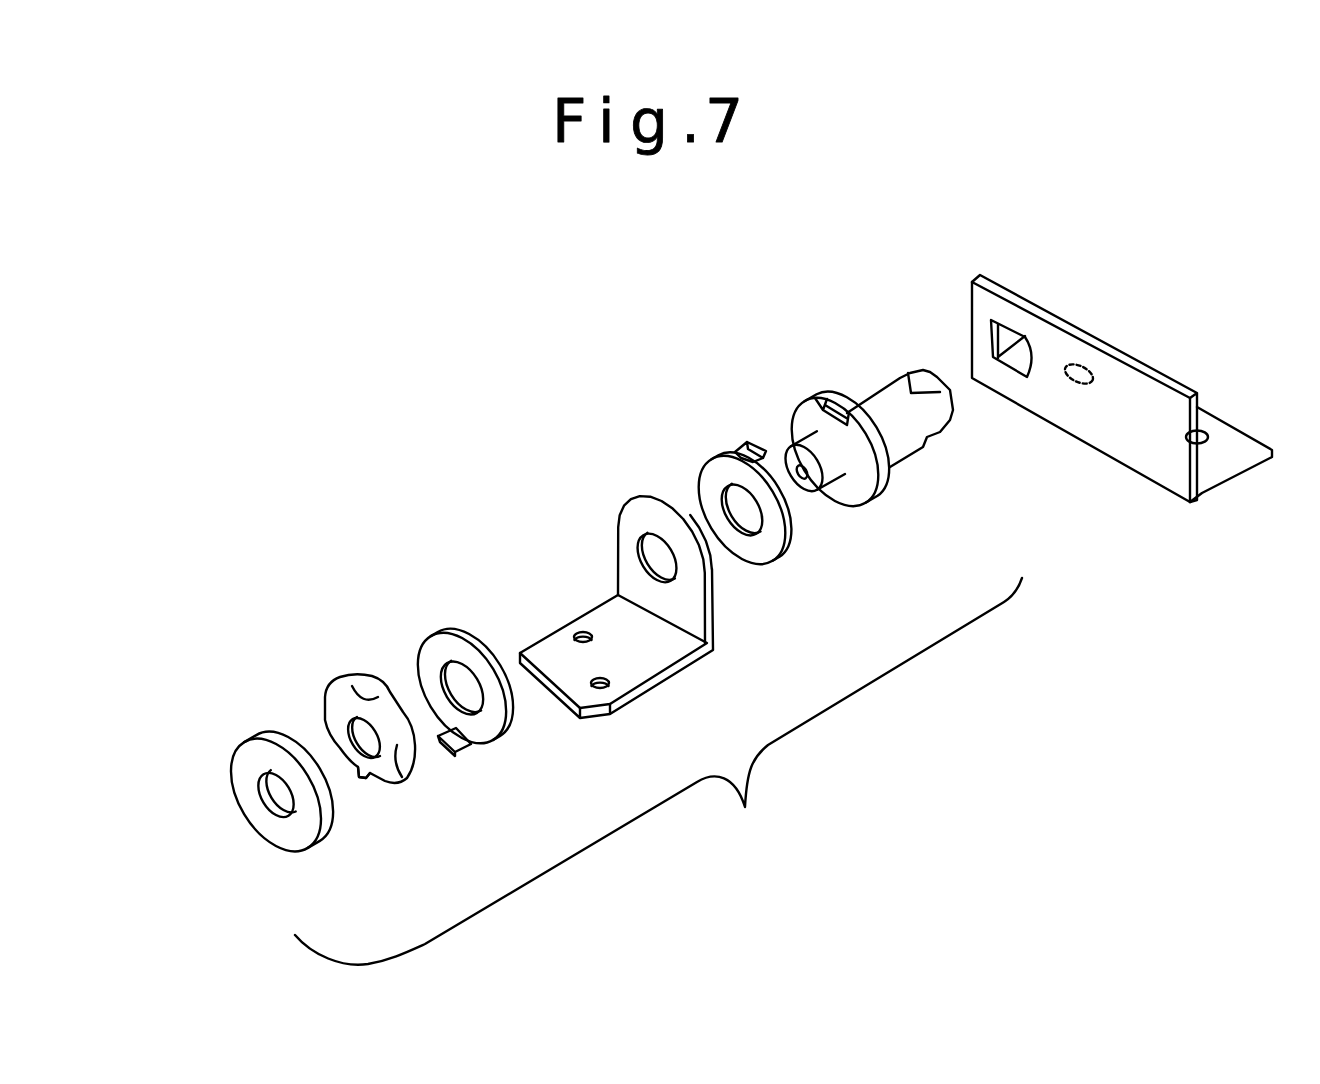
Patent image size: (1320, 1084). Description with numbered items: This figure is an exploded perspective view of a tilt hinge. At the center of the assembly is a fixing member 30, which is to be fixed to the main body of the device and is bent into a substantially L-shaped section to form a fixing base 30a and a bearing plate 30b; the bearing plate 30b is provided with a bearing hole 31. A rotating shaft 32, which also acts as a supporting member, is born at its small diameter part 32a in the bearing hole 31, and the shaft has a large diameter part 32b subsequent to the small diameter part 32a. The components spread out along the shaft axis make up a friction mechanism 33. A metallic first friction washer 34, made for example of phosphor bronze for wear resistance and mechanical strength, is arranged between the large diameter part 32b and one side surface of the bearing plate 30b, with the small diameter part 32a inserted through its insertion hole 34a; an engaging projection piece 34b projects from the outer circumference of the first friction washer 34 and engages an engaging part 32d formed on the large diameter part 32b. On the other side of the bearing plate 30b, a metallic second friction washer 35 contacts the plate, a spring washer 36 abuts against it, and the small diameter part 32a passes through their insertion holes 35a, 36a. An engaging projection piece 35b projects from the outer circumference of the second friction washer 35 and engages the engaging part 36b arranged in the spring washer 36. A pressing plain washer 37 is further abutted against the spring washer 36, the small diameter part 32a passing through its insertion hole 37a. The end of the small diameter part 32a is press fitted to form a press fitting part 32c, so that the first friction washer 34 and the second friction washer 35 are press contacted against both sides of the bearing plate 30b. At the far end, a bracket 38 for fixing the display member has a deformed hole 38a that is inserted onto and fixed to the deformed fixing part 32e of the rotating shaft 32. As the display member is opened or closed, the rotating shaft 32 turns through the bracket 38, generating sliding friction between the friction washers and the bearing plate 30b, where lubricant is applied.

The fixing member 30 is at (615, 596).
The fixing base 30a is at (593, 617).
The bearing plate 30b is at (620, 537).
The bearing hole 31 is at (638, 561).
The rotating shaft 32 is at (879, 444).
The small diameter part 32a is at (815, 420).
The large diameter part 32b is at (866, 487).
The press fitting part 32c is at (805, 484).
The engaging part 32d is at (826, 397).
The deformed fixing part 32e is at (950, 423).
The friction mechanism 33 is at (785, 859).
The first friction washer 34 is at (708, 500).
The insertion hole 34a is at (718, 495).
The engaging projection piece 34b is at (742, 447).
The second friction washer 35 is at (446, 685).
The insertion hole 35a is at (438, 676).
The engaging projection piece 35b is at (468, 746).
The spring washer 36 is at (379, 774).
The insertion hole 36a is at (393, 783).
The engaging part 36b is at (370, 790).
The pressing plain washer 37 is at (269, 827).
The insertion hole 37a is at (280, 812).
The bracket 38 is at (1080, 363).
The deformed hole 38a is at (993, 336).